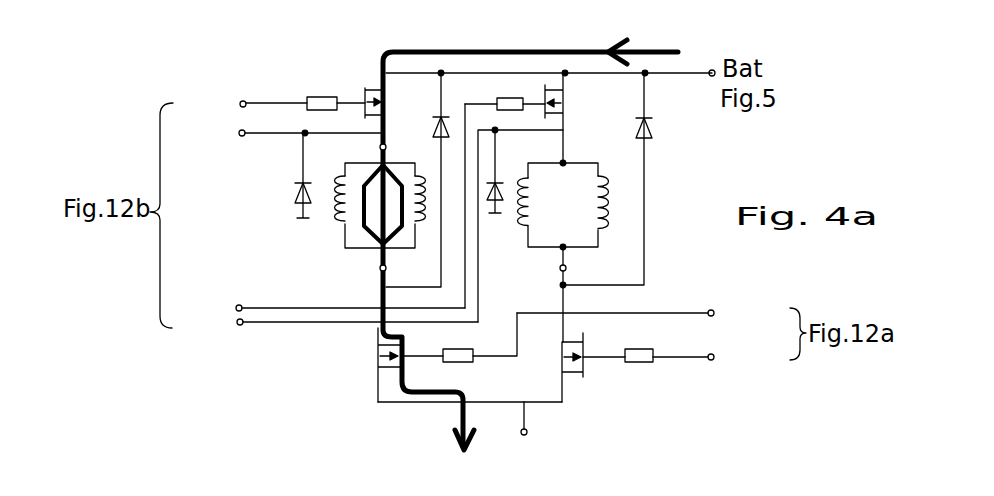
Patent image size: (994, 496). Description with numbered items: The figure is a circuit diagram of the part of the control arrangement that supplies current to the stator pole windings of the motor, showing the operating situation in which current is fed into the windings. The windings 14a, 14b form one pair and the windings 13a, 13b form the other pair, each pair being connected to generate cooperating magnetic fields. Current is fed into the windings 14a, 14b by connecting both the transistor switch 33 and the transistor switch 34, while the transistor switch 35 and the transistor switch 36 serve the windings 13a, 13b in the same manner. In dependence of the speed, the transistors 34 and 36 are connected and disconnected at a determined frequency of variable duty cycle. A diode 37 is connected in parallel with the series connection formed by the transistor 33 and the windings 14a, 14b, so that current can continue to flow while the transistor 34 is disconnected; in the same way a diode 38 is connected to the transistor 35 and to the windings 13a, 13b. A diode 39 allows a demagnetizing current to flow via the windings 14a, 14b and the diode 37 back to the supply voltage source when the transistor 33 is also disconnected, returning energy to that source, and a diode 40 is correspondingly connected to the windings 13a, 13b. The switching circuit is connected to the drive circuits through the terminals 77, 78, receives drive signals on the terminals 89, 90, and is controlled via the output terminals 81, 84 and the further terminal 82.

The transistor switch 33 is at (363, 92).
The transistor switch 34 is at (410, 355).
The transistor switch 35 is at (545, 87).
The transistor switch 36 is at (585, 368).
The diode 37 is at (452, 117).
The diode 38 is at (652, 128).
The diode 39 is at (298, 182).
The diode 40 is at (500, 183).
The stator pole winding 13a is at (528, 225).
The stator pole winding 13b is at (607, 208).
The stator pole winding 14a is at (343, 222).
The stator pole winding 14b is at (420, 222).
The terminal 77 is at (239, 133).
The terminal 78 is at (237, 322).
The output terminal 81 is at (714, 356).
The control input terminal 82 is at (714, 312).
The output terminal 84 is at (527, 434).
The output terminal 89 is at (240, 103).
The output terminal 90 is at (236, 308).